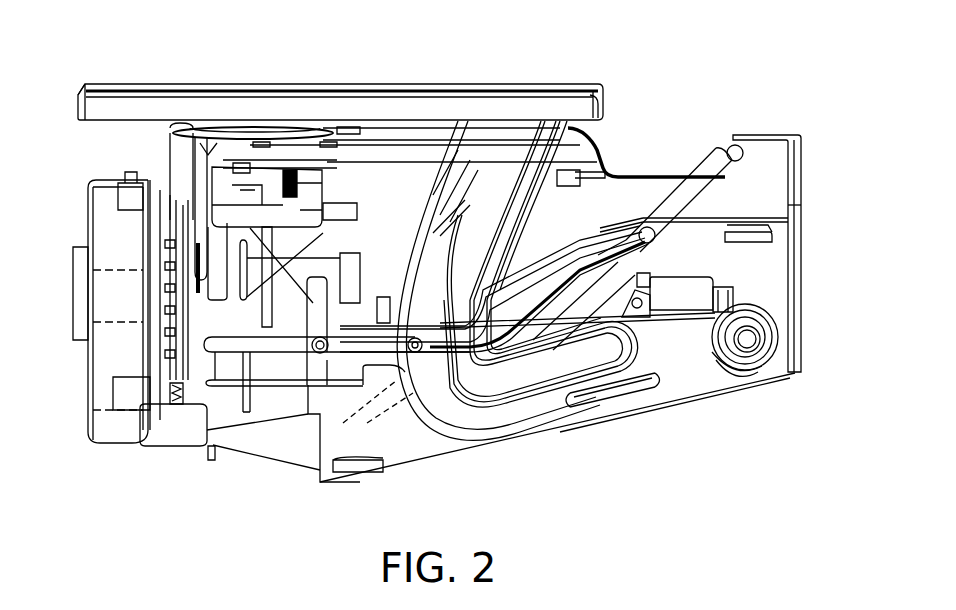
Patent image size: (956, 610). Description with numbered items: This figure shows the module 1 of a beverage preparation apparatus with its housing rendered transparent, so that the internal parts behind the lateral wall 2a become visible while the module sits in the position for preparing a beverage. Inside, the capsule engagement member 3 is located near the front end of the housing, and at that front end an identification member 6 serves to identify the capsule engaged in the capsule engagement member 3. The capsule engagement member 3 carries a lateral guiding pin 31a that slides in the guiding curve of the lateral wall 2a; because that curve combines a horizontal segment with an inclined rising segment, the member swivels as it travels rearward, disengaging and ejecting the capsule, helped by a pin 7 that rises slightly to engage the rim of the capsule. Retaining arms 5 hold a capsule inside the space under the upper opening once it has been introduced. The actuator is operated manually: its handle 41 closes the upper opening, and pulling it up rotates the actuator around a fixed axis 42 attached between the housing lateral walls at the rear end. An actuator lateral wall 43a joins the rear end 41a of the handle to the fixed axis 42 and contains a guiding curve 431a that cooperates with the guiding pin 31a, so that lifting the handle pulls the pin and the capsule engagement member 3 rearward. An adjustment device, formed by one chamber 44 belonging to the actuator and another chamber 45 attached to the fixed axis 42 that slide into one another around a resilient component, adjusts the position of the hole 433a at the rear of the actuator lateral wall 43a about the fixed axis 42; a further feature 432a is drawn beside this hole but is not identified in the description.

The module 1 is at (672, 90).
The lateral wall 2a is at (778, 256).
The capsule engagement member 3 is at (270, 372).
The retaining arms 5 is at (223, 187).
The identification member 6 is at (98, 381).
The pin 7 is at (313, 352).
The lateral guiding pin 31a is at (420, 358).
The handle 41 is at (323, 91).
The rear end of the actuator handle 41a is at (594, 86).
The fixed axis 42 is at (762, 352).
The actuator lateral wall 43a is at (644, 375).
The chamber 44 is at (723, 293).
The chamber 45 is at (693, 290).
The guiding curve 431a is at (541, 388).
The bearing 432a is at (772, 337).
The hole 433a is at (729, 358).